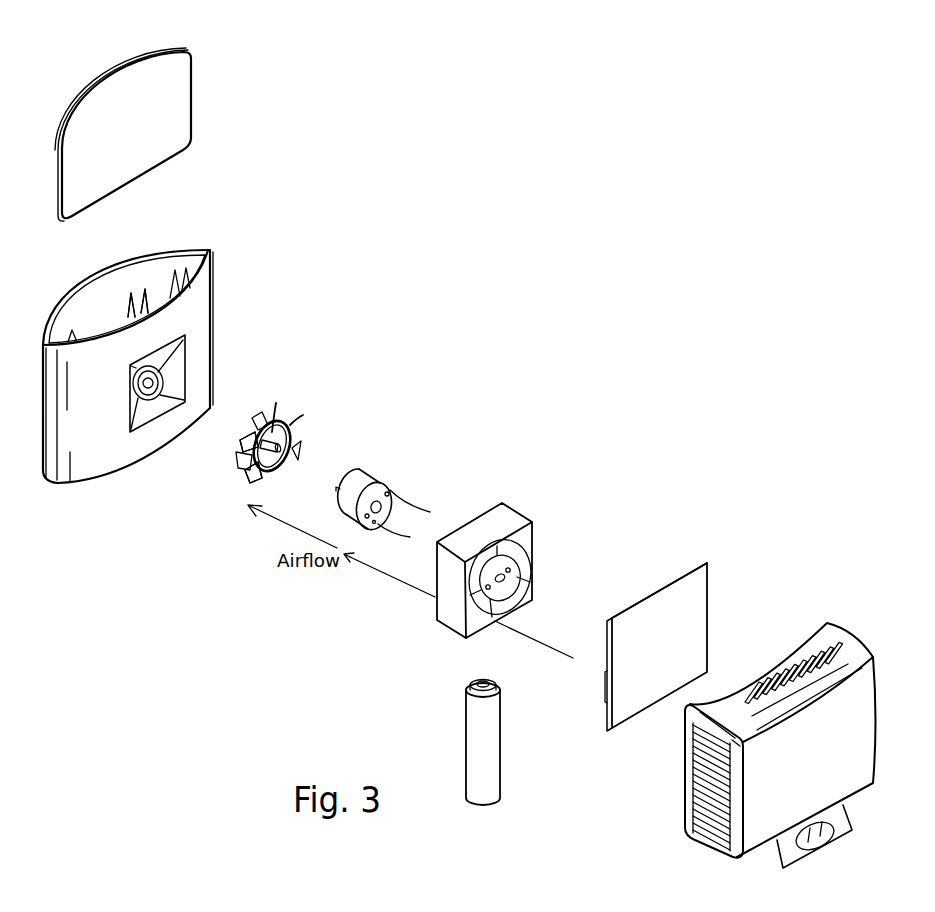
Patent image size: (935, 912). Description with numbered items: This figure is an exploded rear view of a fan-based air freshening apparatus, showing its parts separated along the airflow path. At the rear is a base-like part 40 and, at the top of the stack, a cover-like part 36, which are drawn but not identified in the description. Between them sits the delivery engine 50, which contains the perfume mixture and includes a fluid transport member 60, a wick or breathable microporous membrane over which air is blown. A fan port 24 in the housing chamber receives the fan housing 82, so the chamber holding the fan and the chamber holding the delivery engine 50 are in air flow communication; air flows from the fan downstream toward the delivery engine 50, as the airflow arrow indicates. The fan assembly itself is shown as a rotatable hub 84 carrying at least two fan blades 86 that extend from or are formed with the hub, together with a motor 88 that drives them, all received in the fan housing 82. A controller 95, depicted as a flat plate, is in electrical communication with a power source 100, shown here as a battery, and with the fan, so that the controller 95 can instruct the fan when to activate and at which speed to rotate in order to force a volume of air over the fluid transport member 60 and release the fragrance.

The delivery engine 50 is at (207, 68).
The fluid transport member 60 is at (165, 128).
The fan port 24 is at (183, 343).
The fins 36 is at (162, 298).
The rotatable hub 84 is at (290, 445).
The fan blades 86 is at (247, 477).
The motor 88 is at (367, 480).
The fan housing 82 is at (503, 518).
The controller 95 is at (695, 604).
The power source 100 is at (478, 732).
The base 40 is at (847, 818).